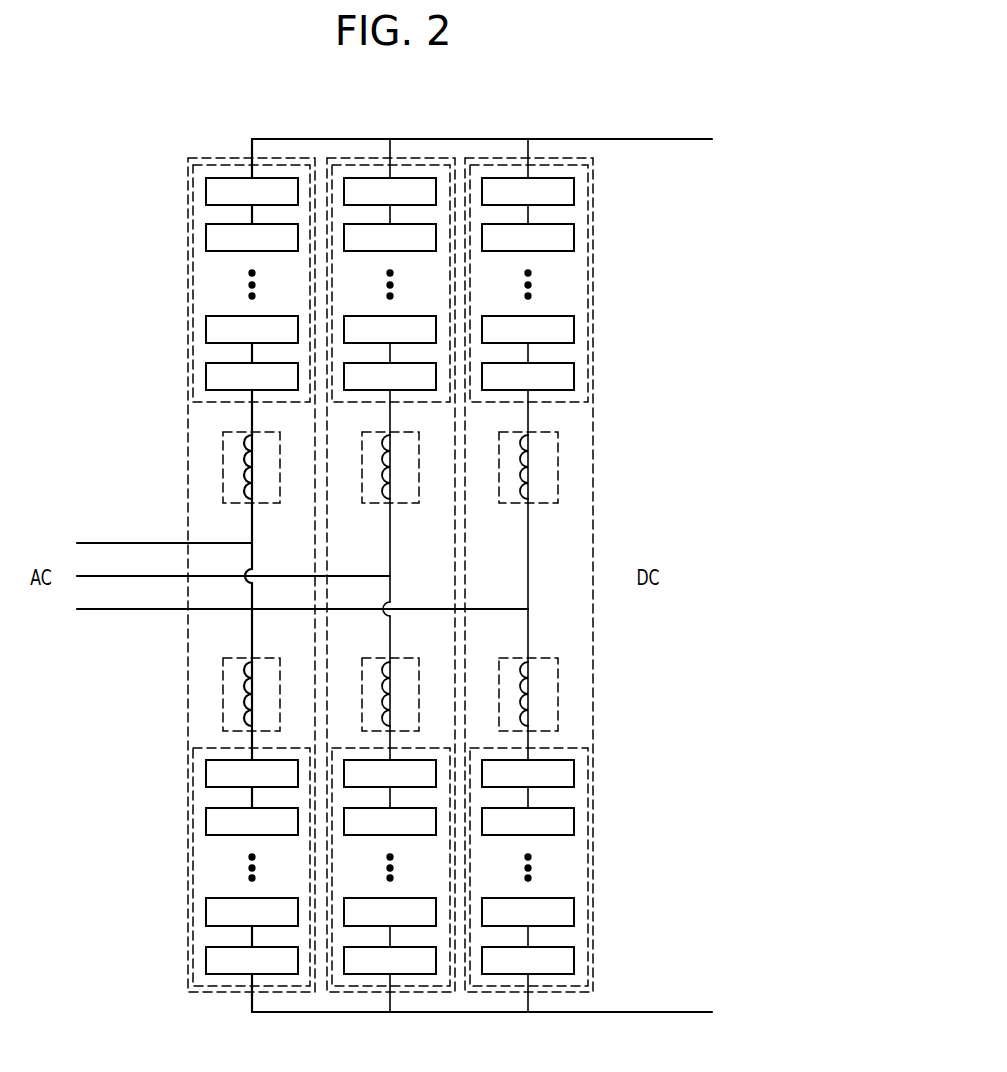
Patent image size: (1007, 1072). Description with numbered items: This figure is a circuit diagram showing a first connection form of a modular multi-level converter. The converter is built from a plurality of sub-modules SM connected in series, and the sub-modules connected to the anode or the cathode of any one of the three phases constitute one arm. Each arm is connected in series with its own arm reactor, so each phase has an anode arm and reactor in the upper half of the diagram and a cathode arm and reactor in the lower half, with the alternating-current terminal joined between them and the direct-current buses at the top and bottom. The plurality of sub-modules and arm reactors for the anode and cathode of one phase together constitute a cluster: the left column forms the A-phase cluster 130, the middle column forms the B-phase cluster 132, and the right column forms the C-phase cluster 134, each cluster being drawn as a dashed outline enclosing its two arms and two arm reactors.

The A-phase cluster 130 is at (208, 157).
The B-phase cluster 132 is at (347, 157).
The C-phase cluster 134 is at (486, 157).